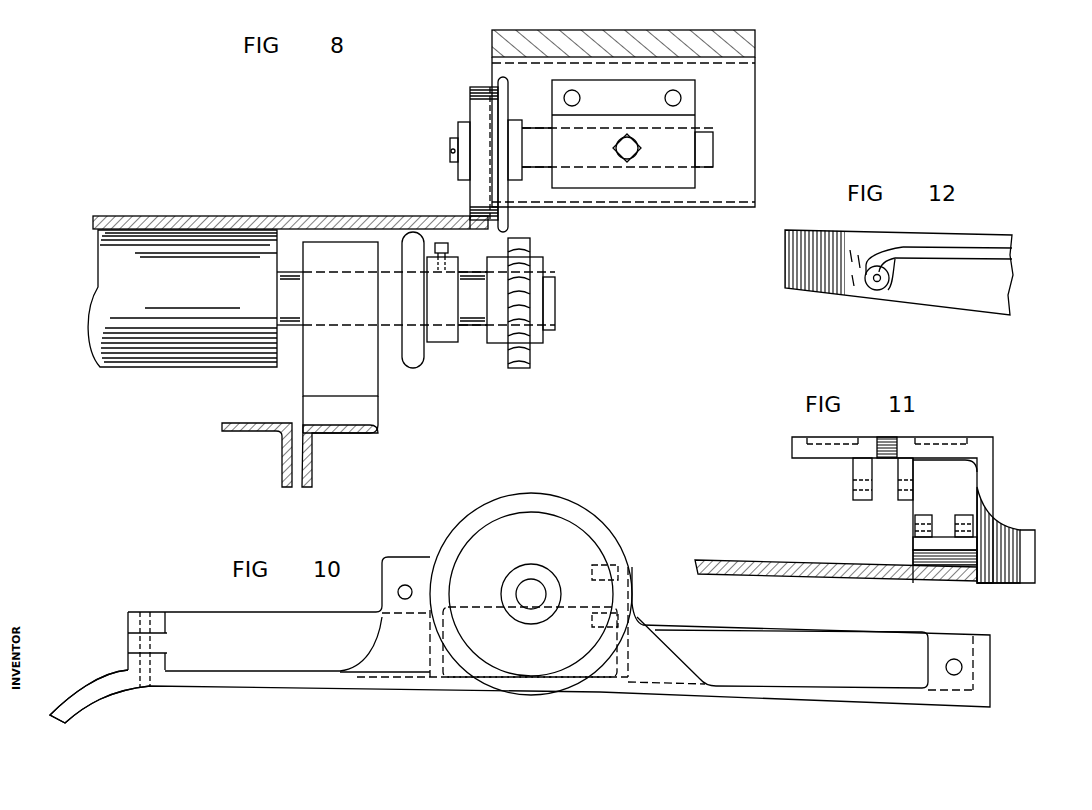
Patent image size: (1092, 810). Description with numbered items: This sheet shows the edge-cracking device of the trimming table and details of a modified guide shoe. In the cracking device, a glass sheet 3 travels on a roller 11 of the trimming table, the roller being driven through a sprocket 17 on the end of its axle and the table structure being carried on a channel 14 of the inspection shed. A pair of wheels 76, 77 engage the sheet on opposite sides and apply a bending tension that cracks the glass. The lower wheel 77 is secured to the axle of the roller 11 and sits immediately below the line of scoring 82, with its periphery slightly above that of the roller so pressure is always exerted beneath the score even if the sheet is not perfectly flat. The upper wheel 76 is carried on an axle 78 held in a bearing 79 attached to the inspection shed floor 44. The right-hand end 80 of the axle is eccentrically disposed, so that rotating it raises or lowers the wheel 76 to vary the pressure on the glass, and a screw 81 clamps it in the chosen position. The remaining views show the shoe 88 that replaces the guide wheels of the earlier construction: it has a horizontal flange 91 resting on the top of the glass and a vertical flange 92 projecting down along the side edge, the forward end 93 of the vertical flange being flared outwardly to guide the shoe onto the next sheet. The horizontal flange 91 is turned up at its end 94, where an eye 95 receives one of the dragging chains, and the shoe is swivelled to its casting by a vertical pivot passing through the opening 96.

In FIG. 8, the glass sheet 3 is at (279, 215).
In FIG. 11, the glass sheet 3 is at (732, 561).
In FIG. 8, the roller 11 is at (170, 353).
In FIG. 8, the channel 14 is at (312, 469).
In FIG. 8, the sprocket 17 is at (516, 366).
In FIG. 8, the inspection shed floor 44 is at (570, 23).
In FIG. 8, the wheel 76 is at (470, 100).
In FIG. 8, the wheel 77 is at (416, 364).
In FIG. 8, the axle 78 is at (449, 149).
In FIG. 8, the bearing 79 is at (660, 183).
In FIG. 8, the eccentric end 80 is at (537, 157).
In FIG. 8, the screw 81 is at (623, 136).
In FIG. 8, the line of scoring 82 is at (415, 215).
In FIG. 11, the shoe 88 is at (838, 460).
In FIG. 12, the horizontal flange 91 is at (972, 248).
In FIG. 11, the horizontal flange 91 is at (912, 554).
In FIG. 10, the horizontal flange 91 is at (218, 620).
In FIG. 12, the vertical flange 92 is at (977, 303).
In FIG. 11, the vertical flange 92 is at (990, 480).
In FIG. 10, the vertical flange 92 is at (283, 684).
In FIG. 10, the forward end 93 is at (86, 698).
In FIG. 12, the turned-up end 94 is at (870, 262).
In FIG. 12, the eye 95 is at (888, 291).
In FIG. 11, the opening 96 is at (896, 437).
In FIG. 10, the opening 96 is at (537, 590).